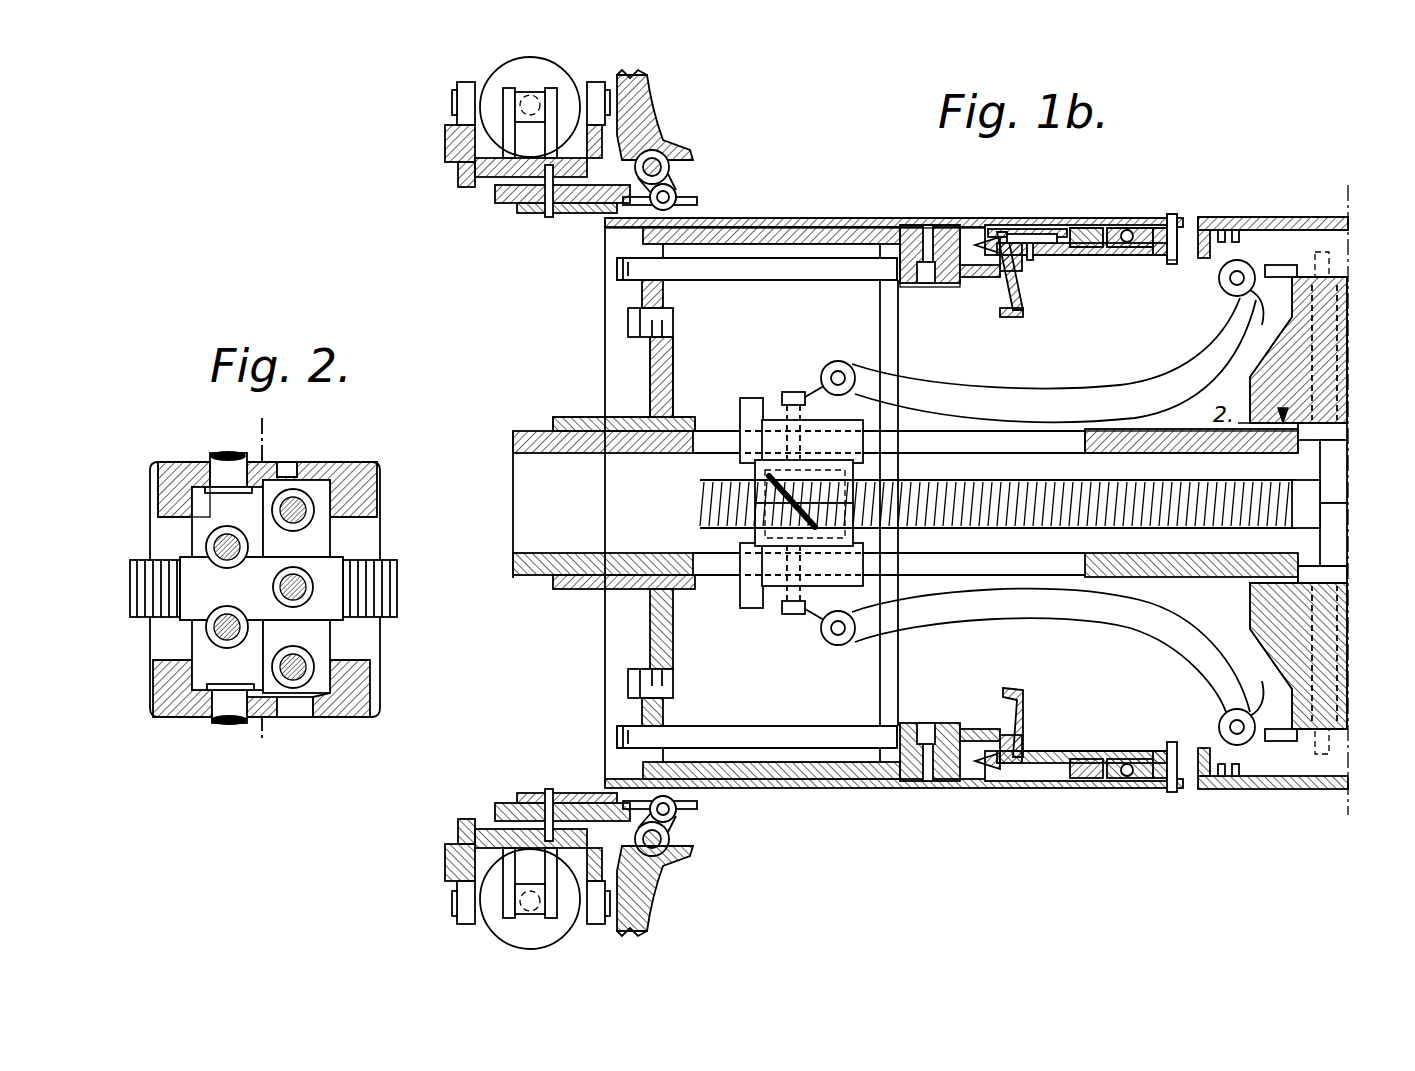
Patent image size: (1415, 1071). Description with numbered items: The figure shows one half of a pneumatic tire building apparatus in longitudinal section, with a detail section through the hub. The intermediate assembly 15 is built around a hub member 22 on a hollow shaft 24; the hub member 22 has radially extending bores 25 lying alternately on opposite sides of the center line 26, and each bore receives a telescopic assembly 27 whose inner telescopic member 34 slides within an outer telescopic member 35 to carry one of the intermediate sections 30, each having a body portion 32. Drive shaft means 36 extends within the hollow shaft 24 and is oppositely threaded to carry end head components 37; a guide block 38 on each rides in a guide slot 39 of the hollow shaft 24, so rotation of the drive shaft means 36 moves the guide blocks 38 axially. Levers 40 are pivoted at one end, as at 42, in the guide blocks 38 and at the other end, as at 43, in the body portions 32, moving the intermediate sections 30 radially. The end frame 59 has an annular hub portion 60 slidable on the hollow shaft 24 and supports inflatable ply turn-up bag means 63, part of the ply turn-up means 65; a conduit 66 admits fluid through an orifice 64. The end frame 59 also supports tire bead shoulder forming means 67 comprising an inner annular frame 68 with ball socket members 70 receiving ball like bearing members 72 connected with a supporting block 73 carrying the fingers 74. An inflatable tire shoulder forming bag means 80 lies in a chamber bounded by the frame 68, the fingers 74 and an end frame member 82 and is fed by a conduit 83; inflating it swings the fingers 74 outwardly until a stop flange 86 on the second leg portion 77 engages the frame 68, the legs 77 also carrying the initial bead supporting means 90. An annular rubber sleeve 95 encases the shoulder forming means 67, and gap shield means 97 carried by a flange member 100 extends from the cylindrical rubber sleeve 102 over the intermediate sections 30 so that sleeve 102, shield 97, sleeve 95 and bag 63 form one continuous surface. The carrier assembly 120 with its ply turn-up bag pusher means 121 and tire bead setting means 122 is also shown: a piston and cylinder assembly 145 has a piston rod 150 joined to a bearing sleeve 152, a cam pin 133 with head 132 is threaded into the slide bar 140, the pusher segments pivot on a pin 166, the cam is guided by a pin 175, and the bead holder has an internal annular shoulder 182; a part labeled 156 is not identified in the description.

In FIG. 1B, the intermediate assembly 15 is at (1262, 350).
In FIG. 2, the intermediate assembly 15 is at (382, 482).
In FIG. 1B, the hub member 22 is at (1340, 305).
In FIG. 2, the hub member 22 is at (165, 485).
In FIG. 1B, the hollow shaft 24 is at (1200, 442).
In FIG. 1B, the radially extending bores 25 is at (1346, 580).
In FIG. 2, the radially extending bores 25 is at (300, 462).
In FIG. 1B, the center line 26 is at (1350, 198).
In FIG. 2, the center line 26 is at (270, 432).
In FIG. 1B, the telescopic assemblies 27 is at (1325, 392).
In FIG. 2, the telescopic assemblies 27 is at (212, 635).
In FIG. 1B, the intermediate sections 30 is at (1278, 240).
In FIG. 1B, the body portion 32 is at (1340, 240).
In FIG. 1B, the inner telescopic member 34 is at (1330, 262).
In FIG. 2, the inner telescopic member 34 is at (278, 588).
In FIG. 2, the outer telescopic member 35 is at (222, 560).
In FIG. 1B, the drive shaft means 36 is at (1310, 478).
In FIG. 2, the drive shaft means 36 is at (335, 563).
In FIG. 1B, the end head components 37 is at (770, 538).
In FIG. 1B, the guide block 38 is at (752, 400).
In FIG. 1B, the guide slot 39 is at (705, 456).
In FIG. 1B, the levers 40 is at (1078, 398).
In FIG. 1B, the pivot 42 is at (840, 372).
In FIG. 1B, the pivot 43 is at (1230, 282).
In FIG. 1B, the end frames 59 is at (652, 370).
In FIG. 1B, the annular hub portion 60 is at (605, 428).
In FIG. 1B, the inflatable ply turn-up bag means 63 is at (825, 218).
In FIG. 1B, the orifice 64 is at (935, 226).
In FIG. 1B, the ply turn-up means 65 is at (705, 148).
In FIG. 1B, the conduit 66 is at (815, 280).
In FIG. 1B, the tire bead shoulder forming means 67 is at (1095, 222).
In FIG. 1B, the inner annular frame 68 is at (1055, 258).
In FIG. 1B, the ball socket members 70 is at (1160, 256).
In FIG. 1B, the ball like bearing members 72 is at (1128, 230).
In FIG. 1B, the supporting block 73 is at (1085, 228).
In FIG. 1B, the tire bead shoulder forming fingers 74 is at (1025, 722).
In FIG. 1B, the second leg portion 77 is at (1012, 292).
In FIG. 1B, the tire shoulder forming bag means 80 is at (1048, 228).
In FIG. 1B, the end frame member 82 is at (1070, 248).
In FIG. 1B, the conduit 83 is at (1028, 236).
In FIG. 1B, the stop flange 86 is at (1010, 318).
In FIG. 1B, the first or initial bead supporting means 90 is at (985, 242).
In FIG. 1B, the annular rubber sleeve 95 is at (1060, 222).
In FIG. 1B, the gap shield means 97 is at (1172, 216).
In FIG. 1B, the flange member 100 is at (1120, 262).
In FIG. 1B, the cylindrical rubber sleeve 102 is at (1232, 218).
In FIG. 1B, the carrier assembly 120 is at (430, 124).
In FIG. 1B, the ply turn-up bag pusher means 121 is at (652, 90).
In FIG. 1B, the tire bead setting means 122 is at (518, 220).
In FIG. 1B, the head of cam pin 132 is at (500, 203).
In FIG. 1B, the cam pin 133 is at (549, 217).
In FIG. 1B, the slide bar 140 is at (568, 812).
In FIG. 1B, the piston and cylinder assembly 145 is at (485, 66).
In FIG. 1B, the piston rod 150 is at (548, 96).
In FIG. 1B, the bearing sleeve 152 is at (530, 96).
In FIG. 1B, the axle 156 is at (508, 915).
In FIG. 1B, the pin 166 is at (670, 167).
In FIG. 1B, the pin 175 is at (677, 196).
In FIG. 1B, the internal annular shoulder 182 is at (672, 855).